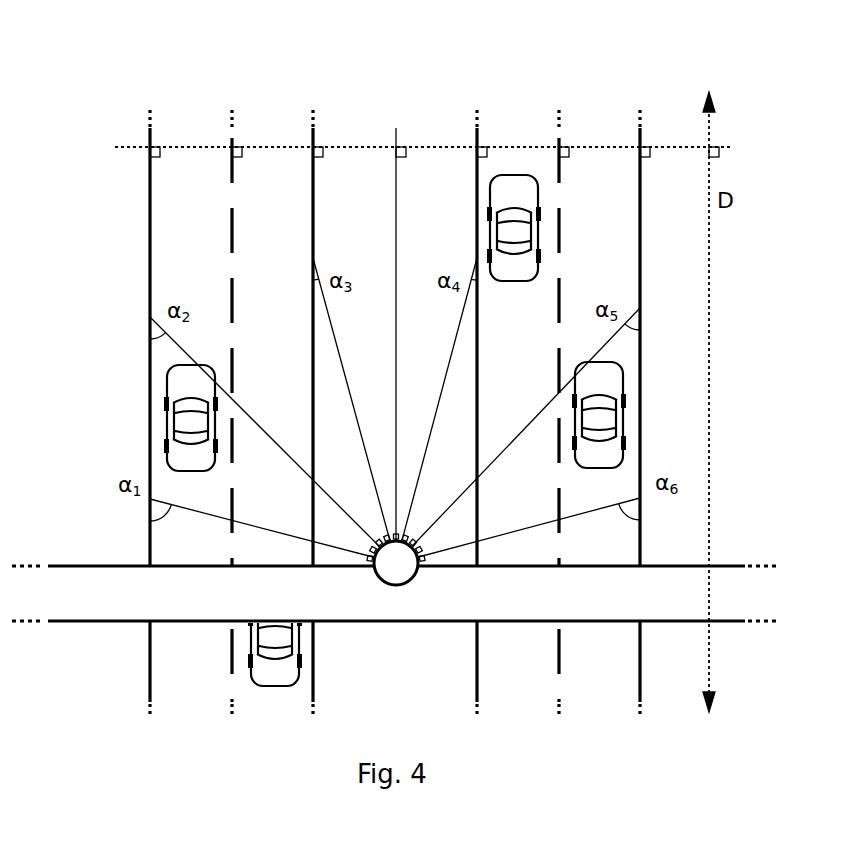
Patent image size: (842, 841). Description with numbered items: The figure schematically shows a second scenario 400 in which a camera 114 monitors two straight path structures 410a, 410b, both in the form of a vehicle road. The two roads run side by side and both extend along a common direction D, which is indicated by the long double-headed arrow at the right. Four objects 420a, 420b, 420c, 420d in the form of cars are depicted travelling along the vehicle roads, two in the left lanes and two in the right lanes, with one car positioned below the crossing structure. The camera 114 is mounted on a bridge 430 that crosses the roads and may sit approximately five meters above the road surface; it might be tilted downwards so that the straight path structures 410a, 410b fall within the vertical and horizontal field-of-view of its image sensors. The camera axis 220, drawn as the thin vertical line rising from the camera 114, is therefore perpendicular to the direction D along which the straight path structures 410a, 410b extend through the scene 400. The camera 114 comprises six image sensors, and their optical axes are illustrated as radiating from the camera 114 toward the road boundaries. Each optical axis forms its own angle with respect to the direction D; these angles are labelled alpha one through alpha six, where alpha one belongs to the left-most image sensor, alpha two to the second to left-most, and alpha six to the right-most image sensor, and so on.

The second scenario 400 is at (193, 70).
The camera axis 220 is at (395, 128).
The straight path structure 410a is at (150, 207).
The straight path structure 410b is at (640, 240).
The object 420a is at (178, 412).
The object 420b is at (285, 665).
The object 420c is at (514, 183).
The object 420d is at (607, 430).
The bridge 430 is at (112, 565).
The camera 114 is at (415, 575).